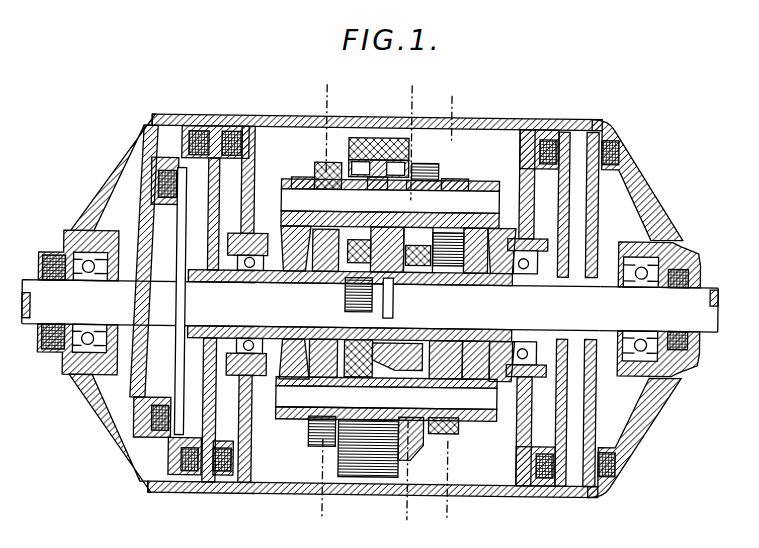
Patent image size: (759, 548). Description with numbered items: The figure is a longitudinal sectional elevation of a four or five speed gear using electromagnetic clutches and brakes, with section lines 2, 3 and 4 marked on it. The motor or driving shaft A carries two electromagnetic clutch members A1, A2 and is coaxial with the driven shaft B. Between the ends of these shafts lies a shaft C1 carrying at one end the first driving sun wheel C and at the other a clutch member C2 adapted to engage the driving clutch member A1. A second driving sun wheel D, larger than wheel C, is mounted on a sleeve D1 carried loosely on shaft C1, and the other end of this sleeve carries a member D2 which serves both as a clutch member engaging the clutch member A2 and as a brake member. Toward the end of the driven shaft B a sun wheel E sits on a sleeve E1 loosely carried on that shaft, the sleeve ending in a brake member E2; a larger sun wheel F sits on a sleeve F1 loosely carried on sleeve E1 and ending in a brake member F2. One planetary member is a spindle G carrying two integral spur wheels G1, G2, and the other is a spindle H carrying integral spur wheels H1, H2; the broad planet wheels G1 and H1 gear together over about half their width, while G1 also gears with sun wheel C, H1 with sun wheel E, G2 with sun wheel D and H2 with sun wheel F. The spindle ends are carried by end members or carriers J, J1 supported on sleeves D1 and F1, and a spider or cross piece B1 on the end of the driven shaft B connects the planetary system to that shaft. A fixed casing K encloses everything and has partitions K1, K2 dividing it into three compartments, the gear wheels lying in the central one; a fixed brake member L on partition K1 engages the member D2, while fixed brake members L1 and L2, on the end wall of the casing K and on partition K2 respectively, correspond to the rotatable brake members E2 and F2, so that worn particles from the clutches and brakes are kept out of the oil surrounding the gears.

The driving shaft A is at (81, 302).
The clutch member A1 is at (153, 420).
The clutch member A2 is at (180, 466).
The driven shaft B is at (659, 309).
The spider or cross piece B1 is at (396, 298).
The toothed wheel C is at (345, 298).
The shaft C1 is at (272, 328).
The clutch member C2 is at (176, 368).
The toothed wheel D is at (318, 350).
The sleeve D1 is at (258, 340).
The brake and clutch member D2 is at (183, 452).
The toothed wheel E is at (400, 347).
The sleeve E1 is at (540, 345).
The brake member E2 is at (594, 197).
The toothed wheel F is at (450, 342).
The sleeve F1 is at (492, 340).
The brake member F2 is at (567, 160).
The spindle G is at (390, 204).
The spur wheel G1 is at (377, 138).
The spur wheel G2 is at (318, 446).
The spindle H is at (386, 399).
The spur wheel H1 is at (414, 456).
The spur wheel H2 is at (450, 433).
The end member or carrier J is at (290, 255).
The end member or carrier J1 is at (496, 250).
The fixed casing K is at (328, 97).
The partition K1 is at (253, 185).
The partition K2 is at (512, 172).
The fixed brake member L is at (236, 464).
The fixed brake member L1 is at (612, 150).
The fixed brake member L2 is at (548, 145).
The section line 2 is at (414, 518).
The section line 3 is at (330, 518).
The section line 4 is at (464, 520).